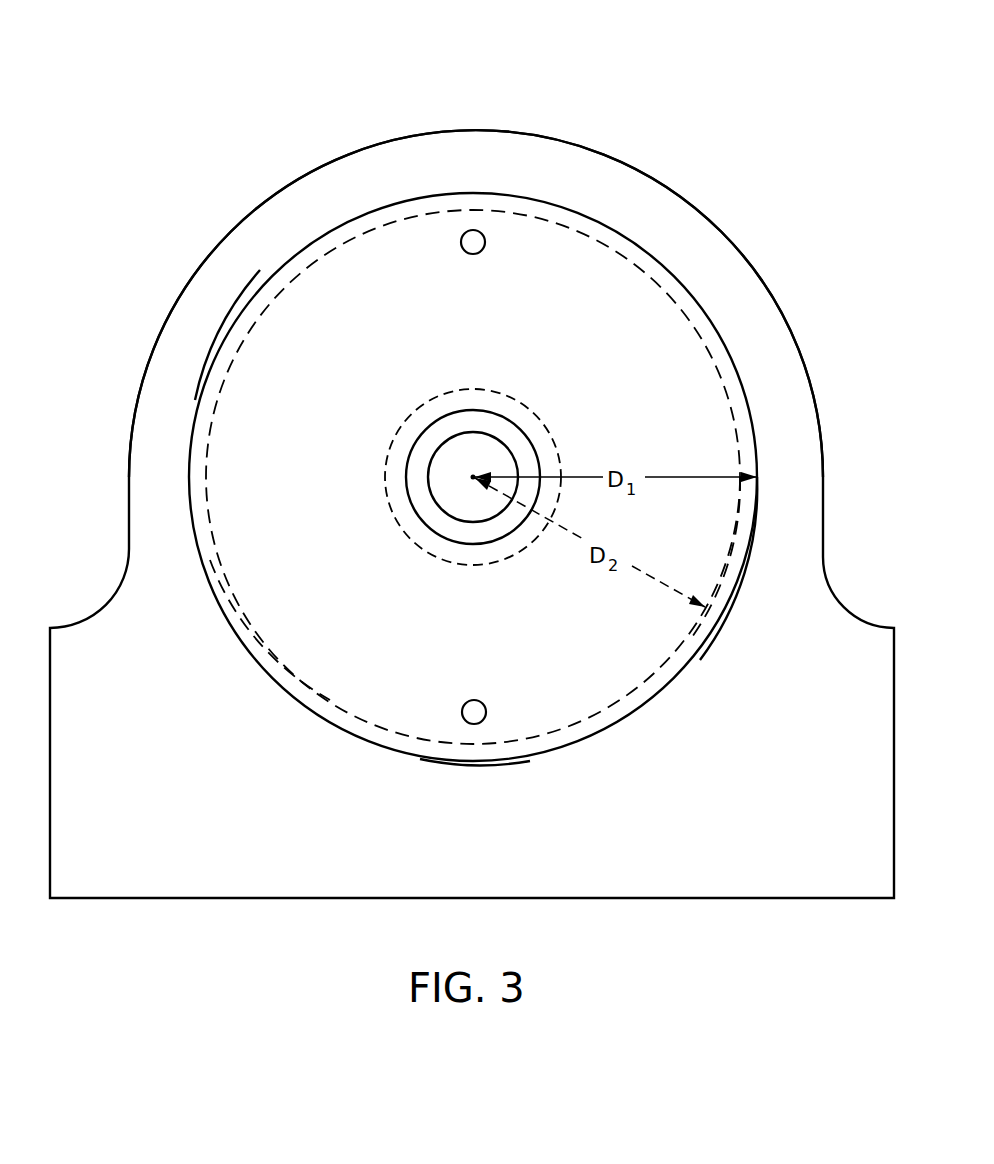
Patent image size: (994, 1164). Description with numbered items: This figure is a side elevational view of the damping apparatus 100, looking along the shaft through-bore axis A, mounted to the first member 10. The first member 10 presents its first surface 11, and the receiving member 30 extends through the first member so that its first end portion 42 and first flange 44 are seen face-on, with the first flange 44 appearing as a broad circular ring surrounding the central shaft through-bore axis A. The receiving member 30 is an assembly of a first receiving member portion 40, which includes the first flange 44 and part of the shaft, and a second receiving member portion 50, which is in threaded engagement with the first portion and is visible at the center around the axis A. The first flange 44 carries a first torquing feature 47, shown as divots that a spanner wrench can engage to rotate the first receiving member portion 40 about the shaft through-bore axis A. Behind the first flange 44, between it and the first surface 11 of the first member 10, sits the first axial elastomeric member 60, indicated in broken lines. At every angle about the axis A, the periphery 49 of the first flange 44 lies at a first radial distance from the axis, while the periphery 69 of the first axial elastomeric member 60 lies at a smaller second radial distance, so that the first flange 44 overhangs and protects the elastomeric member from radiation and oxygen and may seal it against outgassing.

The damping apparatus 100 is at (702, 112).
The first member 10 is at (696, 212).
The first surface 11 is at (263, 210).
The receiving member 30 is at (418, 760).
The first receiving member portion 40 is at (622, 687).
The first end portion 42 is at (270, 357).
The first flange 44 is at (500, 756).
The first torquing feature 47 is at (485, 246).
The periphery of the first flange 49 is at (755, 530).
The second receiving member portion 50 is at (460, 533).
The first axial elastomeric member 60 is at (322, 688).
The periphery of the first axial elastomeric member 69 is at (716, 598).
The shaft through-bore axis A is at (473, 477).